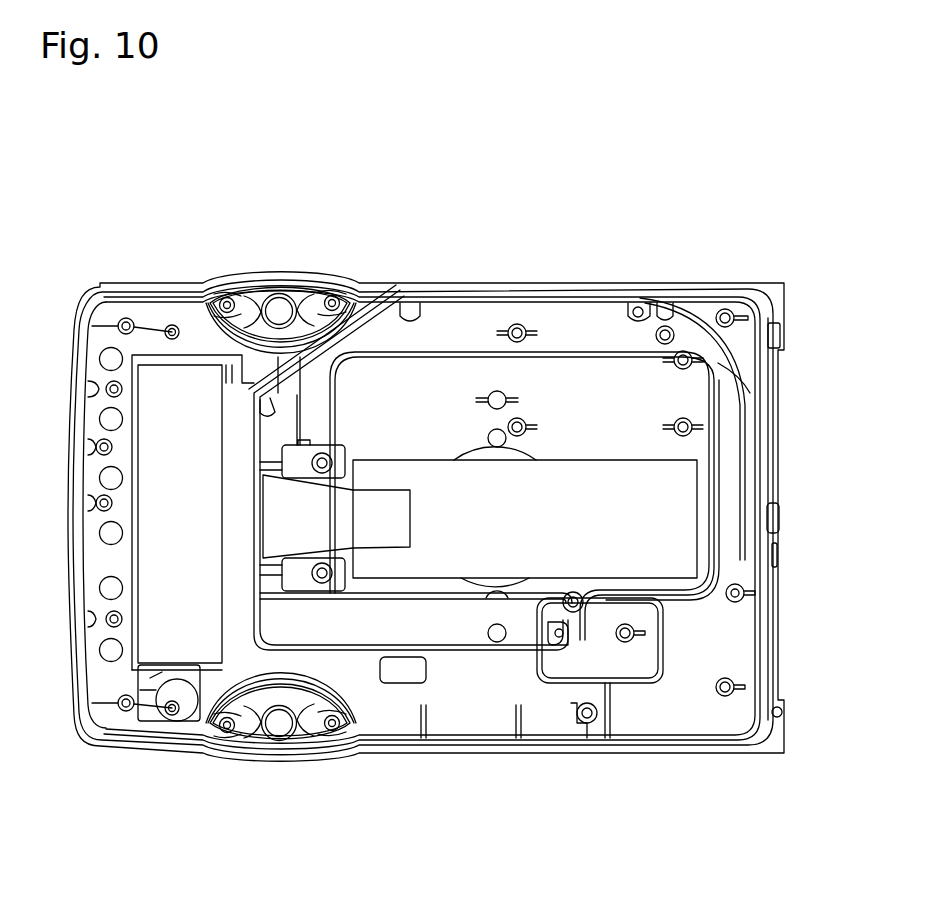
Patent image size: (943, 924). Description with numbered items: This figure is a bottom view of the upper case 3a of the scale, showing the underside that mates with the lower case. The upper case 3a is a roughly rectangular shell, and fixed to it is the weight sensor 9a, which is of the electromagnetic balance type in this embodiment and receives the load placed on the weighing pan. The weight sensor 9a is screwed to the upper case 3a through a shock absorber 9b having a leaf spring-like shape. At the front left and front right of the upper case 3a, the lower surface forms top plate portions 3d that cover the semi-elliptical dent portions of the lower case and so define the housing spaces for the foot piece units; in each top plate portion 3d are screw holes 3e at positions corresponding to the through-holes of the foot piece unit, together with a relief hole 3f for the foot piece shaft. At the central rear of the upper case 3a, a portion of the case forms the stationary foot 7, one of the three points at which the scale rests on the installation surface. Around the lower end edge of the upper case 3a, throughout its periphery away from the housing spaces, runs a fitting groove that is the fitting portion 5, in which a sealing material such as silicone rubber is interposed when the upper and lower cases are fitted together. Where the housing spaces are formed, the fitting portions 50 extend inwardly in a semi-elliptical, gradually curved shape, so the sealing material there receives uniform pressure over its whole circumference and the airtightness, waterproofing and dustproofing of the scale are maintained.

The upper case 3a is at (787, 306).
The top plate portion 3d is at (202, 292).
The screw holes 3e is at (227, 296).
The relief hole 3f is at (280, 305).
The fitting portion 5 is at (558, 289).
The stationary foot 7 is at (778, 519).
The weight sensor 9a is at (680, 548).
The shock absorber 9b is at (380, 525).
The fitting portions 50 is at (270, 356).